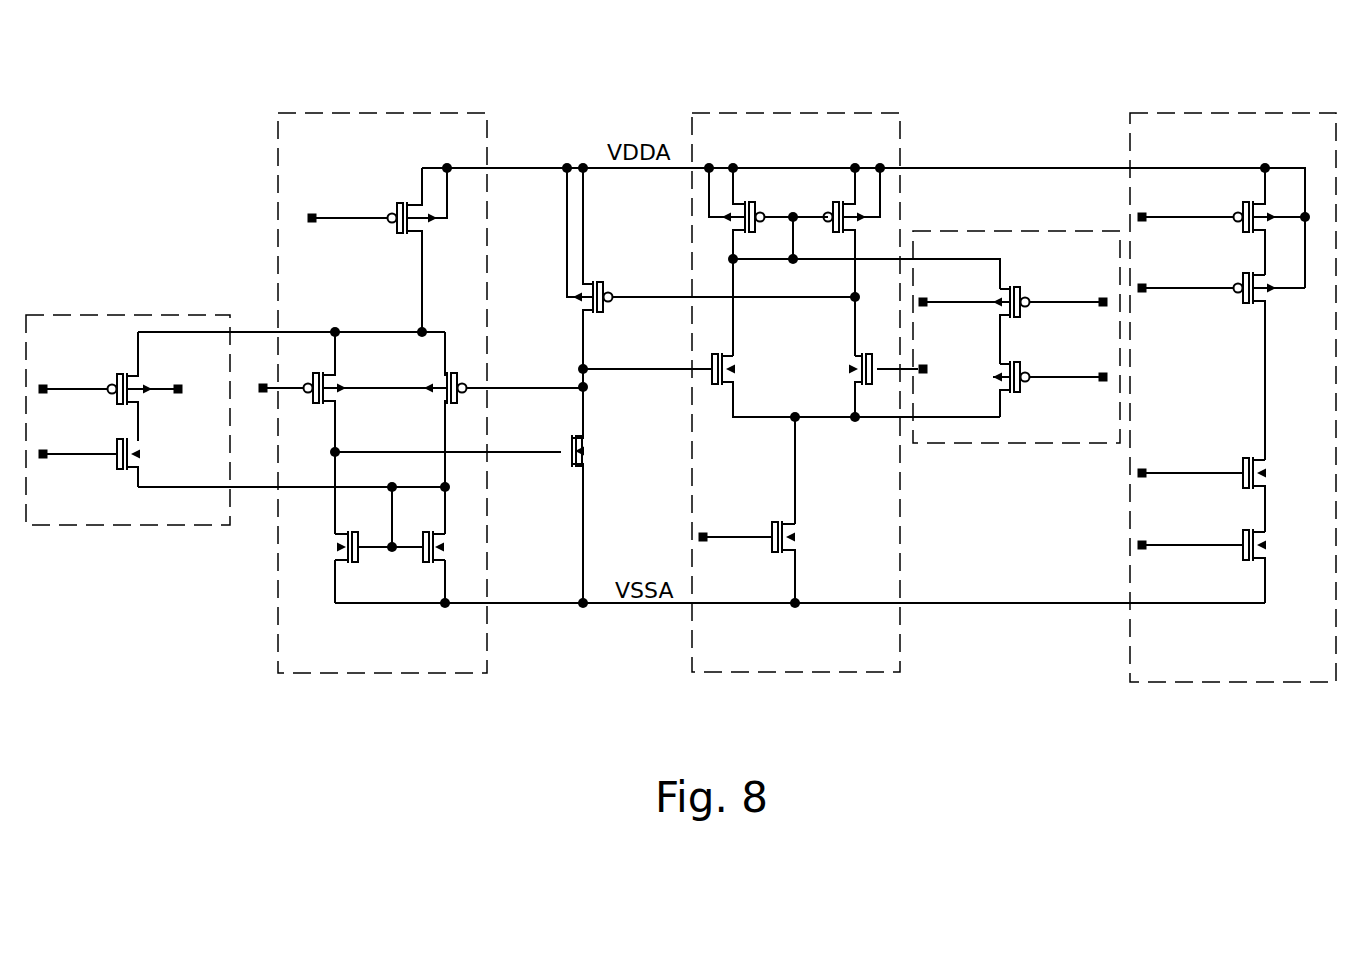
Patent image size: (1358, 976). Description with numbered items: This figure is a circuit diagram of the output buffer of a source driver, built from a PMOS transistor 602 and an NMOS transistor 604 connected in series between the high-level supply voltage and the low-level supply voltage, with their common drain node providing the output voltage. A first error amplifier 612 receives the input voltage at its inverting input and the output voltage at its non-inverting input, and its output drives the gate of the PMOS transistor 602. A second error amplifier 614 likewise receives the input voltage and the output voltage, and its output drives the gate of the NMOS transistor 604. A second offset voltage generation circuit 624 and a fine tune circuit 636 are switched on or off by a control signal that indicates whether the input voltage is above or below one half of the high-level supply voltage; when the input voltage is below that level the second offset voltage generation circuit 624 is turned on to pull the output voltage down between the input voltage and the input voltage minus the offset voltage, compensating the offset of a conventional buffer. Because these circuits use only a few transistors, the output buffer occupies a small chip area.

The PMOS transistor 602 is at (53, 323).
The NMOS transistor 604 is at (585, 455).
The first error amplifier 612 is at (308, 142).
The second error amplifier 614 is at (820, 133).
The second offset voltage generation circuit 624 is at (1037, 430).
The fine tune circuit 636 is at (1257, 133).